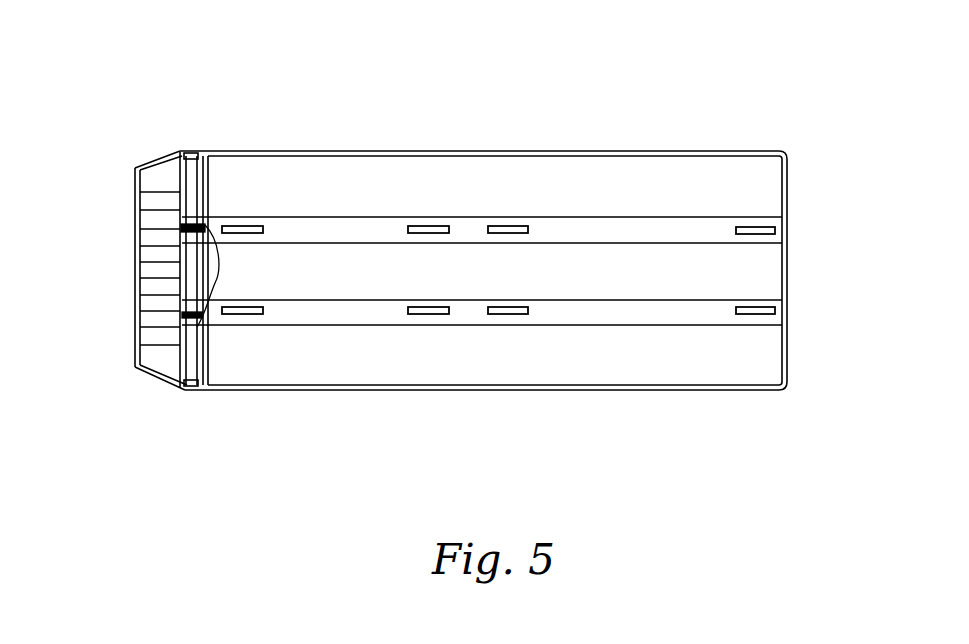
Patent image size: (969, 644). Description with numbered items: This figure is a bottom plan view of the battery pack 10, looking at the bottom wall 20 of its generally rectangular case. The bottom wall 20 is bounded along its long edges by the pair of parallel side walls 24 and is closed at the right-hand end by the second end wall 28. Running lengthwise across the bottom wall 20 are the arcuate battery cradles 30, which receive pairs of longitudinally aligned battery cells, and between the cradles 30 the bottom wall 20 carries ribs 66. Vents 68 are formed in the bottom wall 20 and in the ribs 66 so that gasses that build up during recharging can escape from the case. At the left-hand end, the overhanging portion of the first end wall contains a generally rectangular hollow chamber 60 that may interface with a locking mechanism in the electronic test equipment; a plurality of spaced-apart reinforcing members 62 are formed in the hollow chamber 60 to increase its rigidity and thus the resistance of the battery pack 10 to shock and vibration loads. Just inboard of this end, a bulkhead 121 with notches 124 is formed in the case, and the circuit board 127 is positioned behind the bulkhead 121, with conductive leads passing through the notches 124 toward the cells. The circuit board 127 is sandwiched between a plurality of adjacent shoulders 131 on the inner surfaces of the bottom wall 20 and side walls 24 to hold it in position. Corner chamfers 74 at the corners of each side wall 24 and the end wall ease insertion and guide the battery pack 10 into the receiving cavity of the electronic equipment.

The battery pack 10 is at (692, 126).
The bottom wall 20 is at (310, 180).
The side walls 24 is at (250, 152).
The second end wall 28 is at (786, 297).
The arcuate battery cradles 30 is at (370, 268).
The hollow chamber 60 is at (148, 194).
The reinforcing members 62 is at (150, 342).
The ribs 66 is at (612, 310).
The vents 68 is at (513, 228).
The corner chamfers 74 is at (154, 161).
The bulkhead 121 is at (200, 388).
The notches 124 is at (207, 218).
The circuit board 127 is at (133, 170).
The shoulders 131 is at (192, 226).